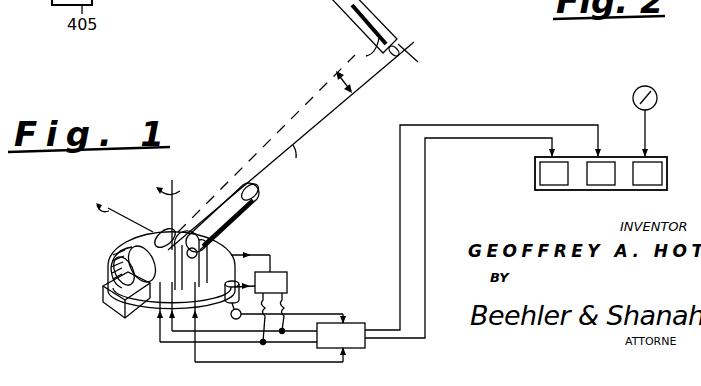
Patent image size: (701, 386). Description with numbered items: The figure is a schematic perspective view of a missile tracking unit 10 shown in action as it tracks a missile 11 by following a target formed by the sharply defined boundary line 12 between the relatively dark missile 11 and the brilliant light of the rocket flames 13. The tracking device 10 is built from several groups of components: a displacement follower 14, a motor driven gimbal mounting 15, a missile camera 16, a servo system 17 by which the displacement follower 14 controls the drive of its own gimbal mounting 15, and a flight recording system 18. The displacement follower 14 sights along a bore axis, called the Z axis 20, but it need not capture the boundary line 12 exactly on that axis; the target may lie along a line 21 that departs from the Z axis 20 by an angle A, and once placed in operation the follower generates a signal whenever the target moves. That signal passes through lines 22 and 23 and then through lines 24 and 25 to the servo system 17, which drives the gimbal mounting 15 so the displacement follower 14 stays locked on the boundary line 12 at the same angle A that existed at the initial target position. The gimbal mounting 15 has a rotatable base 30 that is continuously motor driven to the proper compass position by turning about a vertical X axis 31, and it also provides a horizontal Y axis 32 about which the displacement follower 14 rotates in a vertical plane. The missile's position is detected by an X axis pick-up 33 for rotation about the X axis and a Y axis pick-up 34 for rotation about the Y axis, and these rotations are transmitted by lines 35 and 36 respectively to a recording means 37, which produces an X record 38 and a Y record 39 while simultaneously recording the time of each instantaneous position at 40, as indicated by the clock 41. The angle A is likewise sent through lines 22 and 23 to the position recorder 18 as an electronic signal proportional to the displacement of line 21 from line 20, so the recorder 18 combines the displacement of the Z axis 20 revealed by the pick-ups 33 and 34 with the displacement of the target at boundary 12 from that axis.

The missile tracking unit 10 is at (250, 229).
The missile 11 is at (357, 17).
The boundary line 12 is at (366, 56).
The rocket flames 13 is at (417, 59).
The displacement follower 14 is at (218, 196).
The motor driven gimbal mounting 15 is at (234, 247).
The missile camera 16 is at (114, 273).
The servo system 17 is at (259, 272).
The flight recording system 18 is at (535, 176).
The Z axis 20 is at (318, 125).
The line to target 21 is at (306, 104).
The line 22 is at (157, 316).
The line 23 is at (159, 340).
The line 24 is at (284, 311).
The line 25 is at (284, 303).
The rotatable base 30 is at (118, 250).
The X axis 31 is at (178, 192).
The Y axis 32 is at (120, 217).
The X axis pick-up 33 is at (227, 300).
The Y axis pick-up 34 is at (216, 246).
The line 35 is at (238, 318).
The line 36 is at (195, 356).
The recording means 37 is at (459, 236).
The X record 38 is at (555, 185).
The Y record 39 is at (600, 185).
The time record 40 is at (645, 185).
The clock 41 is at (657, 102).